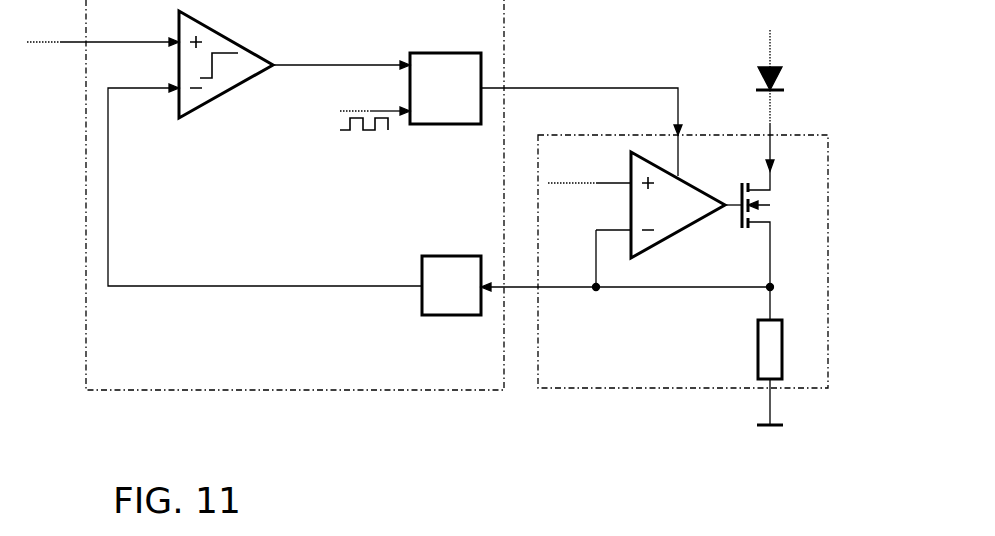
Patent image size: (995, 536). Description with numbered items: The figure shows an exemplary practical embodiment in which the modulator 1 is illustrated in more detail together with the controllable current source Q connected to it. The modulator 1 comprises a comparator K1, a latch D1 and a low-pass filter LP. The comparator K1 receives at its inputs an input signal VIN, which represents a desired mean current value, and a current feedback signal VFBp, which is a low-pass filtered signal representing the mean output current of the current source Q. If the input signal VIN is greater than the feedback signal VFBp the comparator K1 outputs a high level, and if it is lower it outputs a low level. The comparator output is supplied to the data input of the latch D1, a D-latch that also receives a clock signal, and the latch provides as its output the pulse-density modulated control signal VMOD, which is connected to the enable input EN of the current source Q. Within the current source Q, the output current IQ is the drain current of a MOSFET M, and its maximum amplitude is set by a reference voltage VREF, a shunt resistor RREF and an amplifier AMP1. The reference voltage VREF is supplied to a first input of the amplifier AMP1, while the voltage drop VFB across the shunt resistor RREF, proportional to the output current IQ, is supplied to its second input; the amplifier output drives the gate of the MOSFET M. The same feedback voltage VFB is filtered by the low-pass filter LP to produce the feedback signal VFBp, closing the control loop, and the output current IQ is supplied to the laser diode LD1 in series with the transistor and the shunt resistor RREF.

The modulator 1 is at (343, 391).
The current source Q is at (655, 389).
The comparator K1 is at (226, 67).
The latch D1 is at (461, 125).
The low-pass filter LP is at (451, 285).
The amplifier AMP1 is at (659, 221).
The laser diode LD1 is at (784, 76).
The shunt resistor RREF is at (748, 356).
The MOSFET M is at (747, 228).
The input signal VIN is at (103, 34).
The current feedback signal VFBp is at (265, 174).
The pulse-density modulated control signal VMOD is at (581, 123).
The reference voltage VREF is at (589, 174).
The feedback voltage VFB is at (566, 289).
The output current IQ is at (778, 151).